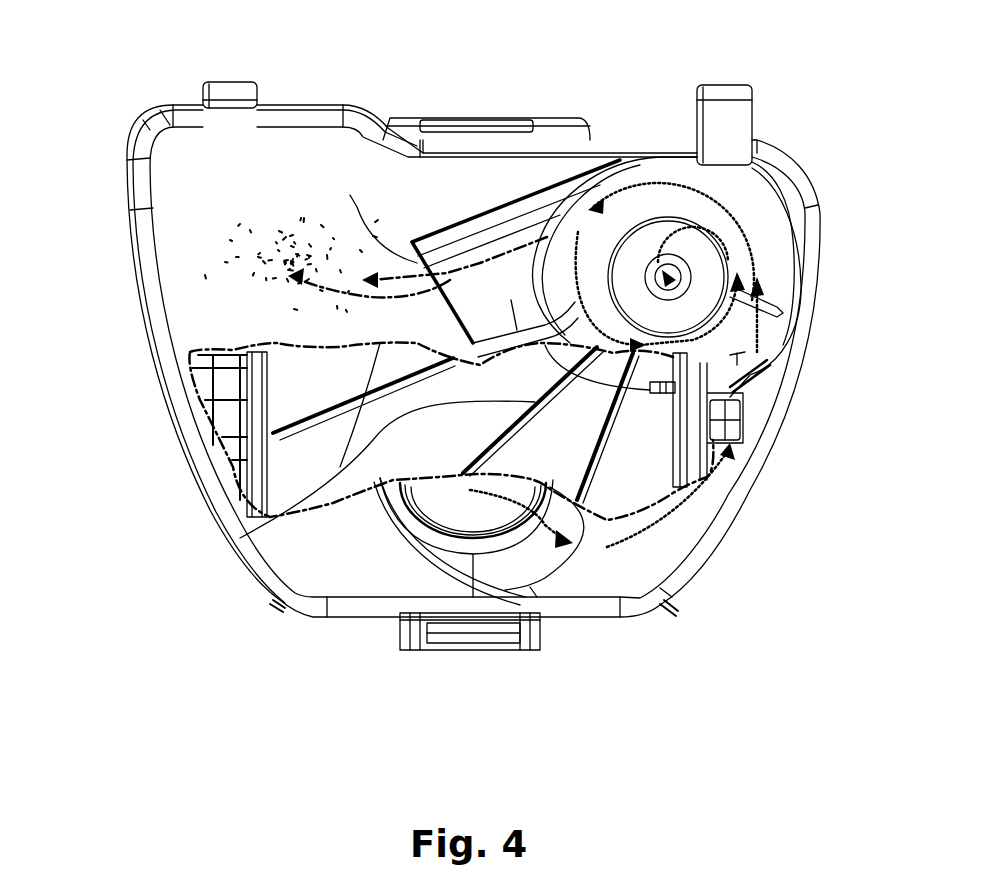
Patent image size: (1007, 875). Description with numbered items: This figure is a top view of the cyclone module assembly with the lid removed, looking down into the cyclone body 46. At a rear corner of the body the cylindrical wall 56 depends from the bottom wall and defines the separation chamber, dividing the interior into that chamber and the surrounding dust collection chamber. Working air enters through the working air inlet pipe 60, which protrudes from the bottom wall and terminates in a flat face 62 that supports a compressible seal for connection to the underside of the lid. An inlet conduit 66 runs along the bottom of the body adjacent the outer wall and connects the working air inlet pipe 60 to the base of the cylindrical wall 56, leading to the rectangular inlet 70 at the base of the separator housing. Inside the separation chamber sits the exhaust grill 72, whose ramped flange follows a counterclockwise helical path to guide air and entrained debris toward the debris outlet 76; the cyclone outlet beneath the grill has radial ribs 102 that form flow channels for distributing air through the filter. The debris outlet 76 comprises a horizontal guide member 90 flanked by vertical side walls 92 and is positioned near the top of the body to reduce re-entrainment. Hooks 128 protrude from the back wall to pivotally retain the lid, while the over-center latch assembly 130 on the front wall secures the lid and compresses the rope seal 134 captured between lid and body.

The cyclone body 46 is at (127, 148).
The hooks 128 is at (228, 88).
The debris outlet 76 is at (350, 195).
The vertical side walls 92 is at (440, 232).
The horizontal guide member 90 is at (478, 250).
The exhaust grill 72 is at (708, 272).
The inlet 70 is at (737, 357).
The cylindrical wall 56 is at (745, 368).
The inlet conduit 66 is at (643, 563).
The over-center latch assembly 130 is at (497, 643).
The working air inlet pipe 60 is at (443, 503).
The flat face 62 is at (390, 493).
The ribs 102 is at (352, 470).
The rope seal 134 is at (170, 352).